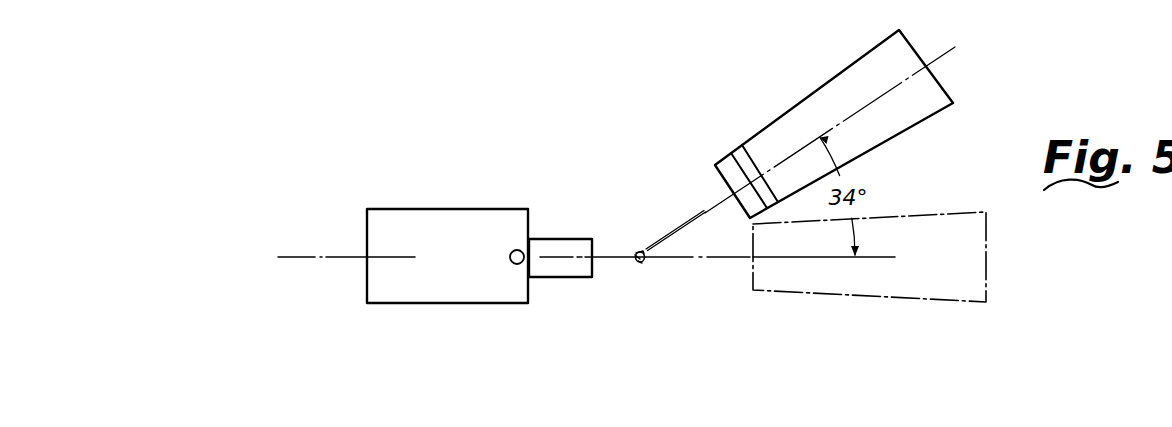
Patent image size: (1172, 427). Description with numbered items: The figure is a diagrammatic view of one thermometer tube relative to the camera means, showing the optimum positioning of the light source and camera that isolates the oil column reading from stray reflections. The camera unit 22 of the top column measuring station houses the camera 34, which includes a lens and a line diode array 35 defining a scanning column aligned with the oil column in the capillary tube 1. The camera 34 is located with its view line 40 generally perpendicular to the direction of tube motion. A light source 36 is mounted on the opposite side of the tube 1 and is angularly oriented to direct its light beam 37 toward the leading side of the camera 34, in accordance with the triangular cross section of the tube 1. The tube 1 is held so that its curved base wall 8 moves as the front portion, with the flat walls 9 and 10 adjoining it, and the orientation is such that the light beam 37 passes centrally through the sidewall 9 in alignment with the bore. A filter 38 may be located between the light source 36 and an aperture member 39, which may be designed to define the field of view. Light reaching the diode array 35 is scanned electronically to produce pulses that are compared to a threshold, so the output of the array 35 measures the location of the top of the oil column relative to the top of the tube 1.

The capillary tube 1 is at (637, 250).
The curved base wall 8 is at (642, 263).
The flat adjacent wall 9 is at (661, 246).
The flat adjacent wall 10 is at (636, 255).
The camera unit 22 is at (518, 172).
The camera 34 is at (405, 246).
The line diode array 35 is at (512, 250).
The light source 36 is at (894, 85).
The light beam 37 is at (694, 219).
The filter 38 is at (738, 146).
The aperture member 39 is at (716, 162).
The view line 40 is at (617, 258).